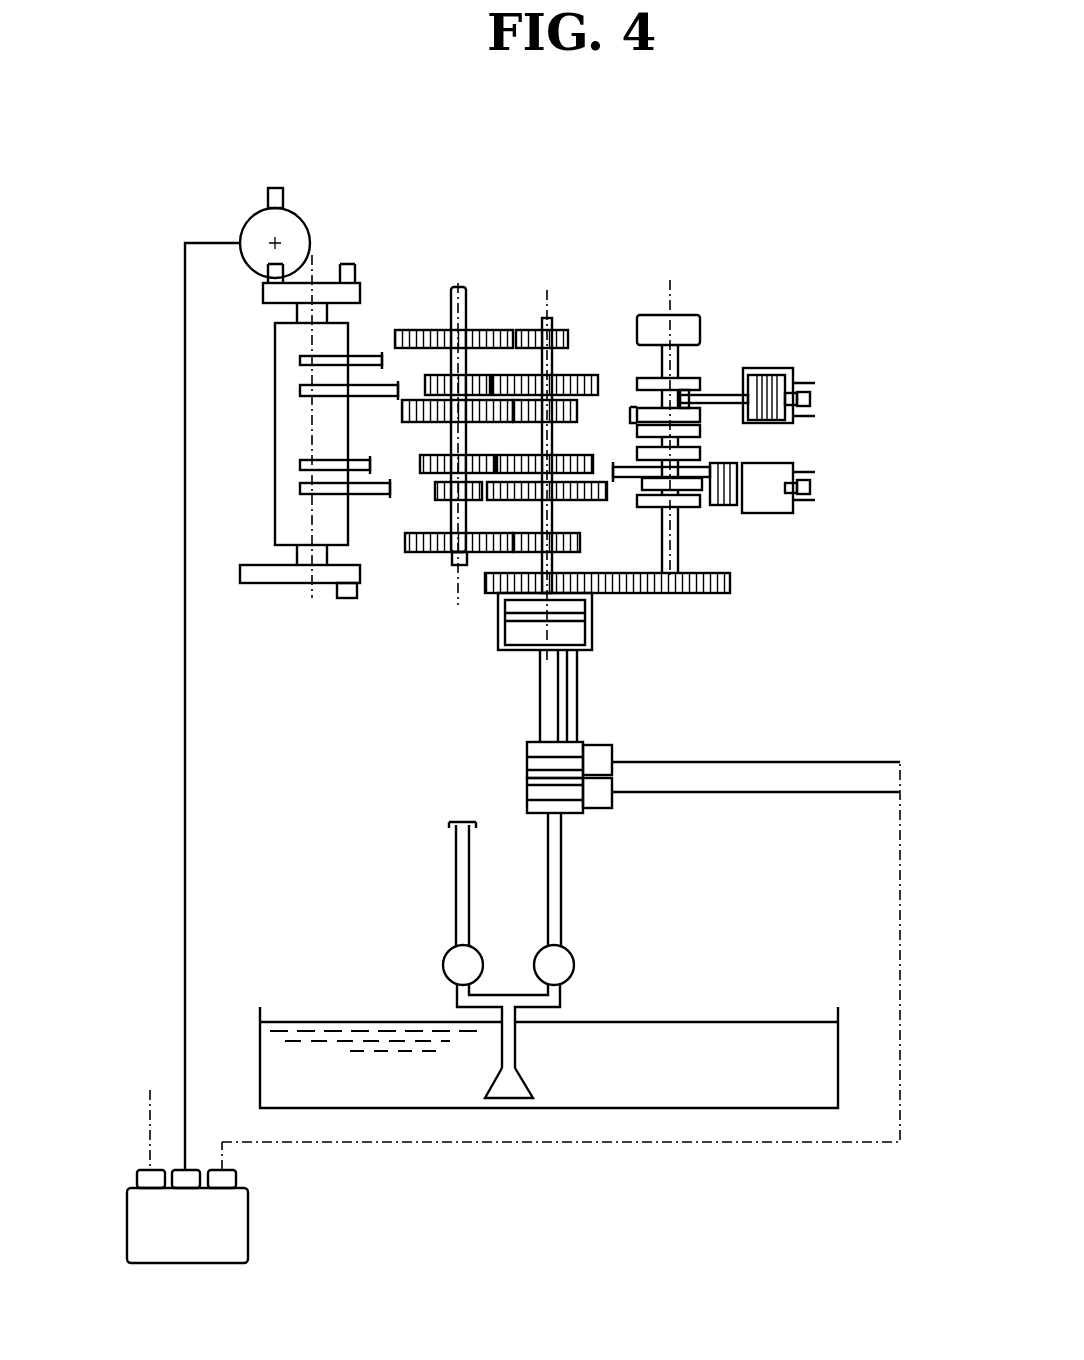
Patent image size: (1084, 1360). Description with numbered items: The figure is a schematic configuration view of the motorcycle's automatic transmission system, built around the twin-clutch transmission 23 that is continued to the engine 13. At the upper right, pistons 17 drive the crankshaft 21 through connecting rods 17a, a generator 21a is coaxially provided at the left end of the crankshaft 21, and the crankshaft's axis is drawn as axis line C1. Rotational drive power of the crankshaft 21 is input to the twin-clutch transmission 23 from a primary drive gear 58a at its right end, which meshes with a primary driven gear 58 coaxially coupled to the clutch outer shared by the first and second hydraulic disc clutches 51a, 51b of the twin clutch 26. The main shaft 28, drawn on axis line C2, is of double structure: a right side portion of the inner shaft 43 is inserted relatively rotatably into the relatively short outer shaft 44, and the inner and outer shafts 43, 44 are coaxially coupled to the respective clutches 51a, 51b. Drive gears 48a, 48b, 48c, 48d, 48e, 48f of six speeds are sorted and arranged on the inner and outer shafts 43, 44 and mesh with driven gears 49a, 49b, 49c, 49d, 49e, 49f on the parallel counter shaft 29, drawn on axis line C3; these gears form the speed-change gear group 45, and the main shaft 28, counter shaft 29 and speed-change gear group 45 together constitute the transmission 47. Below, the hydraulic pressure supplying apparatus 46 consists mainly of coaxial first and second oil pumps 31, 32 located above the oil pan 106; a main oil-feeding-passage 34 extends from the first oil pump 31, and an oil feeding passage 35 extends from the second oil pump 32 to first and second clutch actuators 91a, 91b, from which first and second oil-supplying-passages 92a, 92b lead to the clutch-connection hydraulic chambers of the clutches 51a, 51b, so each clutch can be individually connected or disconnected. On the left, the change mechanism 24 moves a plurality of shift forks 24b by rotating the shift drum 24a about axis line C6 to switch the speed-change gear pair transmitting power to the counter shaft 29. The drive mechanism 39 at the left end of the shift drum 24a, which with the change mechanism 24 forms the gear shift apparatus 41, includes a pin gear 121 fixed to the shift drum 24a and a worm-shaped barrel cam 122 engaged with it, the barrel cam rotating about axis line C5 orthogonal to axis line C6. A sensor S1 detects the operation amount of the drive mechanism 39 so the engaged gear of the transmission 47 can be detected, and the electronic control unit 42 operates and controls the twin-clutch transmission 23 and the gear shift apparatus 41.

The engine 13 is at (724, 370).
The pistons 17 is at (775, 368).
The connecting rods 17a is at (722, 393).
The crankshaft 21 is at (641, 412).
The generator 21a is at (638, 317).
The twin-clutch transmission 23 is at (772, 672).
The change mechanism 24 is at (258, 434).
The shift drum 24a is at (278, 428).
The shift forks 24b is at (322, 389).
The twin clutch 26 is at (707, 680).
The main shaft 28 is at (593, 644).
The counter shaft 29 is at (420, 553).
The first oil pump 31 is at (443, 965).
The second oil pump 32 is at (574, 965).
The main oil-feeding-passage 34 is at (456, 890).
The oil feeding passage 35 is at (548, 890).
The drive mechanism 39 is at (304, 203).
The gear shift apparatus 41 is at (366, 246).
The electronic control unit 42 is at (143, 1265).
The inner shaft 43 is at (606, 582).
The outer shaft 44 is at (632, 582).
The speed-change gear group 45 is at (566, 320).
The hydraulic pressure supplying apparatus 46 is at (640, 868).
The transmission 47 is at (645, 244).
The drive gear 48a is at (518, 376).
The drive gear 48b is at (566, 555).
The drive gear 48c is at (562, 421).
The drive gear 48d is at (518, 552).
The drive gear 48e is at (510, 330).
The drive gear 48f is at (522, 475).
The driven gear 49a is at (436, 330).
The driven gear 49b is at (458, 598).
The driven gear 49c is at (420, 401).
The driven gear 49d is at (437, 488).
The driven gear 49e is at (430, 376).
The driven gear 49f is at (448, 528).
The first disc clutch 51a is at (600, 644).
The second disc clutch 51b is at (600, 612).
The primary driven gear 58 is at (499, 606).
The primary drive gear 58a is at (732, 590).
The first clutch actuator 91a is at (527, 760).
The second clutch actuator 91b is at (527, 794).
The first oil-supplying-passage 92a is at (540, 700).
The second oil-supplying-passage 92b is at (578, 692).
The oil pan 106 is at (752, 1108).
The pin gear 121 is at (265, 292).
The barrel cam 122 is at (256, 220).
The main shaft axis C1 is at (676, 300).
The counter shaft axis C2 is at (548, 300).
The shift shaft axis C3 is at (460, 272).
The rotational axis line of the barrel cam C5 is at (266, 222).
The rotational axis line of the pin gear and shift drum C6 is at (318, 268).
The sensor S1 is at (278, 188).